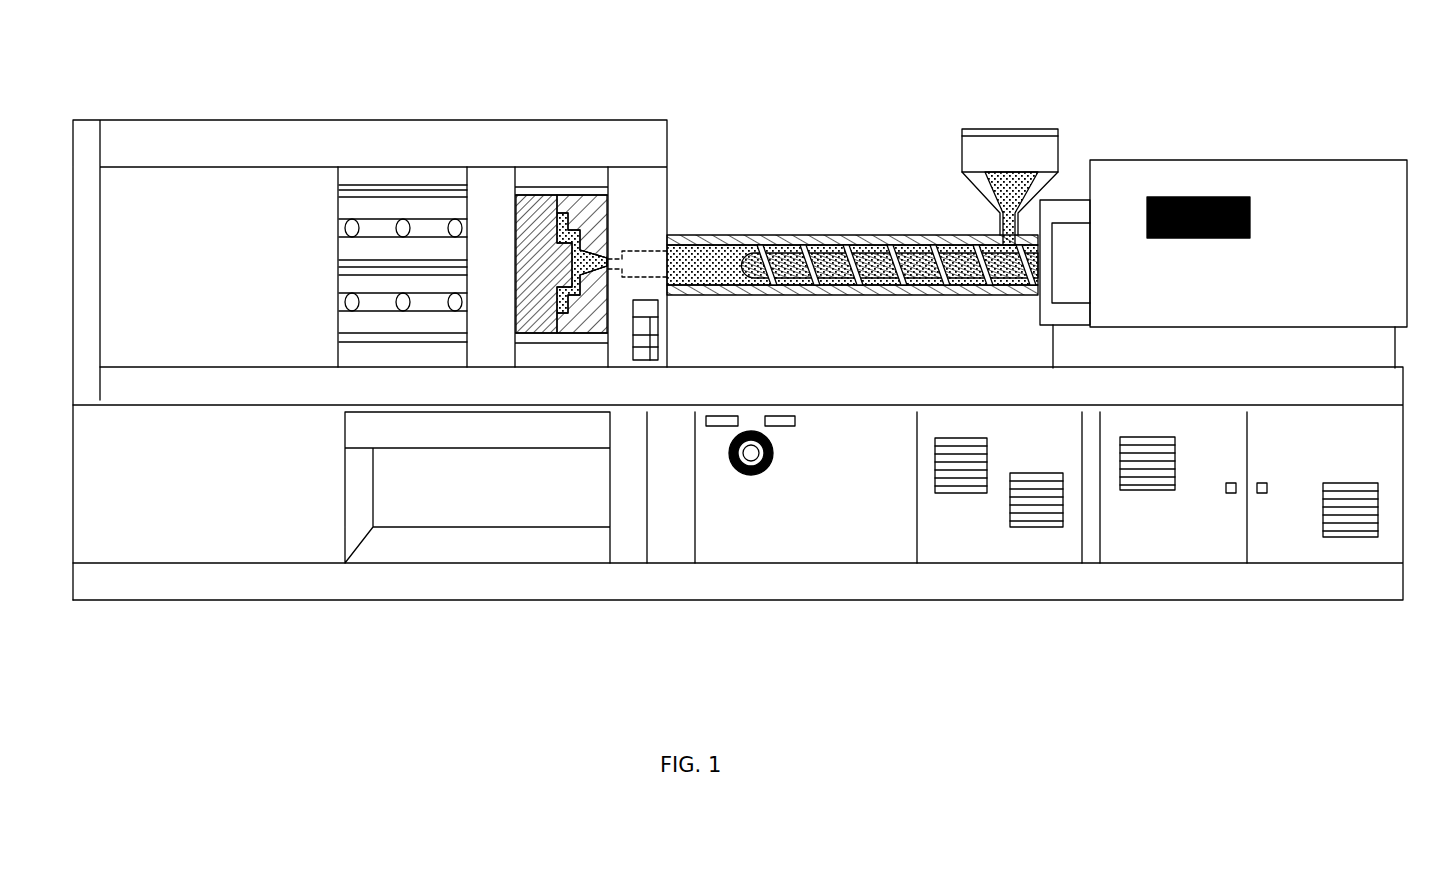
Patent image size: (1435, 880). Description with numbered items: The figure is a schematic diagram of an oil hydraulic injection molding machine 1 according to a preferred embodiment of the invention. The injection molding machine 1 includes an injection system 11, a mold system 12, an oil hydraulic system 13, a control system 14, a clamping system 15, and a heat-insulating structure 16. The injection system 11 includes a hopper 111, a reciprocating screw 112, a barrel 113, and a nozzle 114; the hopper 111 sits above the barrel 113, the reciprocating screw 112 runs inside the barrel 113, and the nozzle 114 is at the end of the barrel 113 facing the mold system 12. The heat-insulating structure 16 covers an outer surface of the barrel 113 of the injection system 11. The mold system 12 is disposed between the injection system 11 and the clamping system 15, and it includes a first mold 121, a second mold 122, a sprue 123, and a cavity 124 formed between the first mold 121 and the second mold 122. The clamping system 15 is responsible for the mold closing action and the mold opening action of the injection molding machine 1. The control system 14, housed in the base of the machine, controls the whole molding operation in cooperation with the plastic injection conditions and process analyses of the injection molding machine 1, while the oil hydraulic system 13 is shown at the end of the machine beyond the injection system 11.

The injection molding machine 1 is at (1100, 120).
The injection system 11 is at (752, 53).
The hopper 111 is at (1023, 128).
The reciprocating screw 112 is at (752, 248).
The barrel 113 is at (905, 245).
The nozzle 114 is at (640, 250).
The heat-insulating structure 16 is at (848, 245).
The mold system 12 is at (493, 62).
The first mold 121 is at (535, 192).
The second mold 122 is at (605, 192).
The sprue 123 is at (600, 276).
The cavity 124 is at (580, 192).
The oil hydraulic system 13 is at (1203, 160).
The control system 14 is at (824, 510).
The clamping system 15 is at (378, 231).